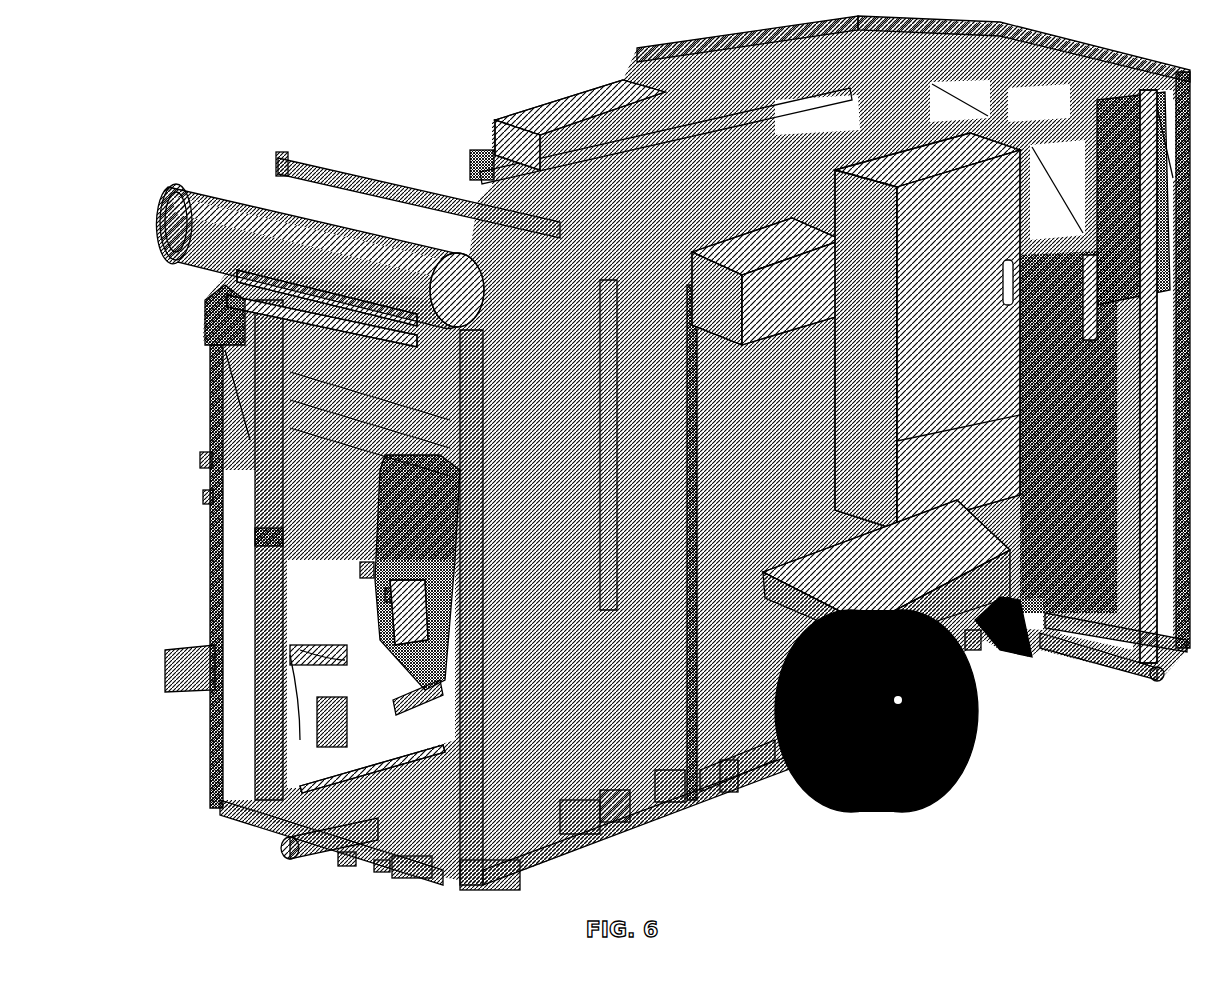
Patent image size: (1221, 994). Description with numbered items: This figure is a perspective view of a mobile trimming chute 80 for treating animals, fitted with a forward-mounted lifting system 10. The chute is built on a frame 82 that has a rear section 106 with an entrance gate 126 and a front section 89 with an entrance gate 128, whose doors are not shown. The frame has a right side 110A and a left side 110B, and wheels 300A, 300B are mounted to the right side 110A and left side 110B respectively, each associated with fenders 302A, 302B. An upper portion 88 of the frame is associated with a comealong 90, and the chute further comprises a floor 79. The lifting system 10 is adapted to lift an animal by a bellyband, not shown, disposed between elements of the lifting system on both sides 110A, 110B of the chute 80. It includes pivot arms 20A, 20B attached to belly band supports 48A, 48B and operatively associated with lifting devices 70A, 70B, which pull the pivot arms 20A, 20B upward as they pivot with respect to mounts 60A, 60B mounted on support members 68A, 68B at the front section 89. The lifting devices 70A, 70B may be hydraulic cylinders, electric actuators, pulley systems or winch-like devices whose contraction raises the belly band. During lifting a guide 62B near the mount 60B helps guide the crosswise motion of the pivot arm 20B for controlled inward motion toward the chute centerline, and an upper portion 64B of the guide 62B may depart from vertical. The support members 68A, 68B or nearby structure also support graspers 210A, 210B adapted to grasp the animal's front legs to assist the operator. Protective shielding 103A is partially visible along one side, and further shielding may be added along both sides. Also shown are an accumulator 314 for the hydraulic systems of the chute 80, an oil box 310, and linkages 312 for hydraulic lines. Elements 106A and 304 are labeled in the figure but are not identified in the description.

The lifting system 10 is at (252, 563).
The pivot arm 20A is at (612, 823).
The pivot arm 20B is at (366, 571).
The belly band support 48A is at (669, 801).
The belly band support 48B is at (390, 595).
The mount 60A is at (395, 870).
The mount 60B is at (203, 461).
The guide 62B is at (260, 541).
The upper portion 64B is at (207, 498).
The support member 68A is at (508, 850).
The support member 68B is at (207, 433).
The lifting device 70A is at (726, 792).
The lifting device 70B is at (211, 386).
The floor 79 is at (348, 864).
The mobile trimming chute 80 is at (144, 118).
The frame 82 is at (1081, 49).
The upper portion 88 is at (838, 69).
The front section 89 is at (382, 870).
The comealong 90 is at (829, 134).
The protective shielding 103A is at (1069, 660).
The rear section 106 is at (1138, 61).
The lower rail 106A is at (1126, 675).
The right side 110A is at (752, 795).
The left side 110B is at (404, 177).
The entrance gate 126 is at (1202, 447).
The entrance gate 128 is at (287, 841).
The grasper 210A is at (590, 836).
The grasper 210B is at (191, 683).
The wheel 300A is at (823, 803).
The wheel 300B is at (390, 524).
The fender 302A is at (976, 646).
The fender 302B is at (211, 333).
The bracket 304 is at (1045, 655).
The oil box 310 is at (573, 87).
The linkages 312 is at (494, 163).
The accumulator 314 is at (234, 206).